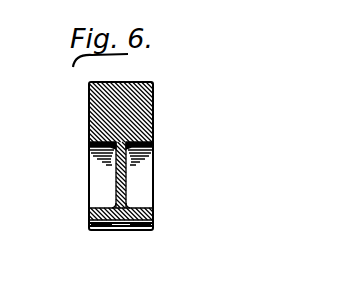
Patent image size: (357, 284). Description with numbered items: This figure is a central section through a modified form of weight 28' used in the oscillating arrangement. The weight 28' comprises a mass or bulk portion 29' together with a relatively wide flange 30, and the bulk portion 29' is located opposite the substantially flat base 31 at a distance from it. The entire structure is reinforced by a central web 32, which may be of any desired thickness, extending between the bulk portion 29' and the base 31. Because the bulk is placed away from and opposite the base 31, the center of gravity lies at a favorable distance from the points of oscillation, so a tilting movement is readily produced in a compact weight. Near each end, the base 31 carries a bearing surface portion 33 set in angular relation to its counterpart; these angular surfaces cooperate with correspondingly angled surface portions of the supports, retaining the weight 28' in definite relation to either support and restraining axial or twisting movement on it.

The weight 28' is at (151, 156).
The mass or bulk portion 29' is at (95, 112).
The flange 30 is at (88, 160).
The base 31 is at (88, 213).
The central web 32 is at (126, 176).
The bearing surface portion 33 is at (113, 232).